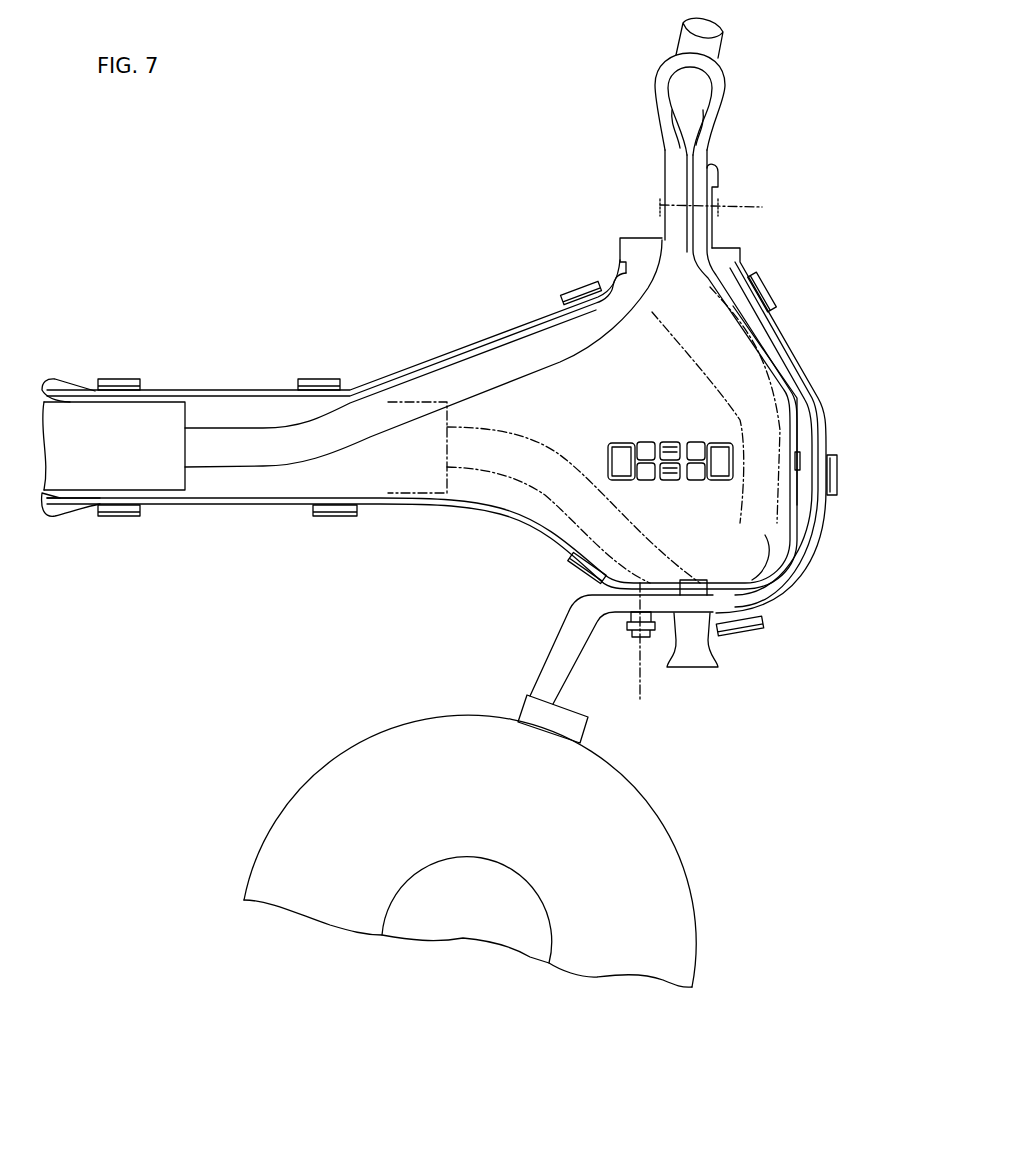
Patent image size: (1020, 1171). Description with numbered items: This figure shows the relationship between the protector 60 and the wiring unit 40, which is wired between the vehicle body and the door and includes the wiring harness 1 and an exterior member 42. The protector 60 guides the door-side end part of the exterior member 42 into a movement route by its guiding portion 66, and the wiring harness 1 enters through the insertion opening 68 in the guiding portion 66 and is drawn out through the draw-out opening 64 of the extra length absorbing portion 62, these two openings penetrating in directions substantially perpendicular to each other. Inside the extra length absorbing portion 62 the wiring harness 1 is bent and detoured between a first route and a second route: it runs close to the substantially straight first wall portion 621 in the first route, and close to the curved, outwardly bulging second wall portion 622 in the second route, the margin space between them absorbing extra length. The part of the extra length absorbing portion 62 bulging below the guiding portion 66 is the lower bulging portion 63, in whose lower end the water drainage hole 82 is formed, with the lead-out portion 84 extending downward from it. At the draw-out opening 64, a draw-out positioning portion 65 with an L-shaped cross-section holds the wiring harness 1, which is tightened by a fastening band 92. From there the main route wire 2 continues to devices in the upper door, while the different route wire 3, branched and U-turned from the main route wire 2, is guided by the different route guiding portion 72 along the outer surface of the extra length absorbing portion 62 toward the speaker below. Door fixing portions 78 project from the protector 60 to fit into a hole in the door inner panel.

The wiring harness 1 is at (205, 427).
The main route wire 2 is at (680, 30).
The different route wire 3 is at (660, 75).
The wiring unit 40 is at (70, 502).
The exterior member 42 is at (157, 487).
The protector 60 is at (272, 206).
The extra length absorbing portion 62 is at (524, 315).
The first wall portion 621 is at (493, 340).
The second wall portion 622 is at (765, 535).
The lower bulging portion 63 is at (560, 531).
The draw-out opening 64 is at (638, 250).
The draw-out positioning portion 65 is at (715, 175).
The guiding portion 66 is at (258, 386).
The insertion opening 68 is at (46, 380).
The different route guiding portion 72 is at (790, 344).
The door fixing portion 78 is at (670, 445).
The water drainage hole 82 is at (685, 587).
The lead-out portion 84 is at (715, 652).
The fastening band 92 is at (709, 460).